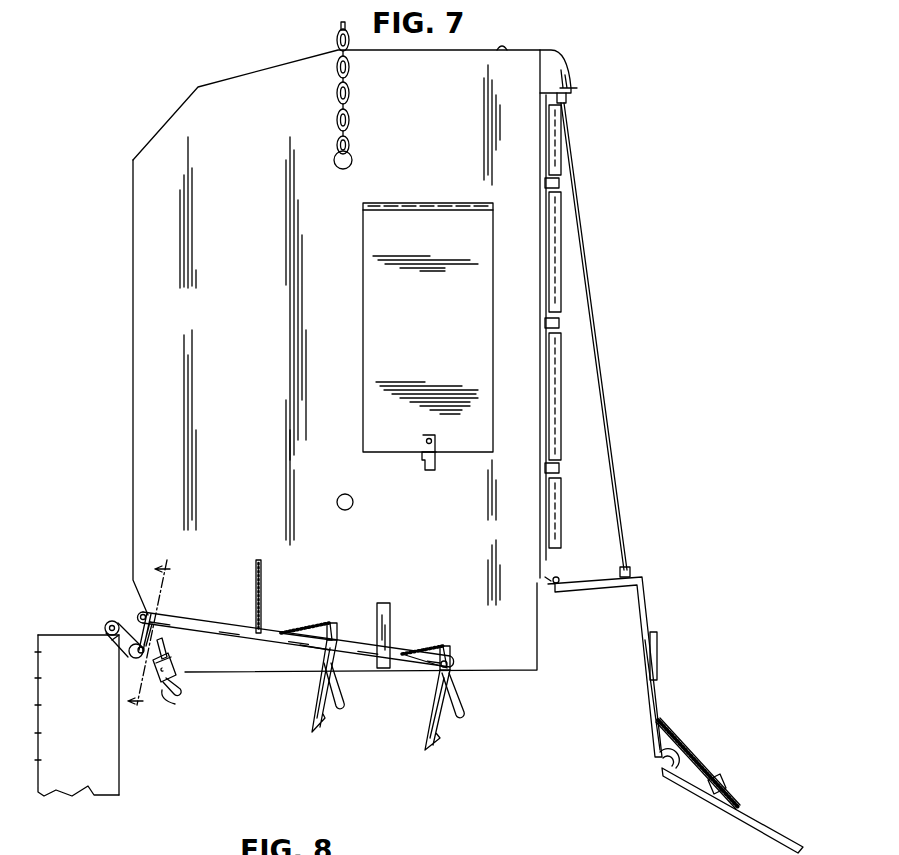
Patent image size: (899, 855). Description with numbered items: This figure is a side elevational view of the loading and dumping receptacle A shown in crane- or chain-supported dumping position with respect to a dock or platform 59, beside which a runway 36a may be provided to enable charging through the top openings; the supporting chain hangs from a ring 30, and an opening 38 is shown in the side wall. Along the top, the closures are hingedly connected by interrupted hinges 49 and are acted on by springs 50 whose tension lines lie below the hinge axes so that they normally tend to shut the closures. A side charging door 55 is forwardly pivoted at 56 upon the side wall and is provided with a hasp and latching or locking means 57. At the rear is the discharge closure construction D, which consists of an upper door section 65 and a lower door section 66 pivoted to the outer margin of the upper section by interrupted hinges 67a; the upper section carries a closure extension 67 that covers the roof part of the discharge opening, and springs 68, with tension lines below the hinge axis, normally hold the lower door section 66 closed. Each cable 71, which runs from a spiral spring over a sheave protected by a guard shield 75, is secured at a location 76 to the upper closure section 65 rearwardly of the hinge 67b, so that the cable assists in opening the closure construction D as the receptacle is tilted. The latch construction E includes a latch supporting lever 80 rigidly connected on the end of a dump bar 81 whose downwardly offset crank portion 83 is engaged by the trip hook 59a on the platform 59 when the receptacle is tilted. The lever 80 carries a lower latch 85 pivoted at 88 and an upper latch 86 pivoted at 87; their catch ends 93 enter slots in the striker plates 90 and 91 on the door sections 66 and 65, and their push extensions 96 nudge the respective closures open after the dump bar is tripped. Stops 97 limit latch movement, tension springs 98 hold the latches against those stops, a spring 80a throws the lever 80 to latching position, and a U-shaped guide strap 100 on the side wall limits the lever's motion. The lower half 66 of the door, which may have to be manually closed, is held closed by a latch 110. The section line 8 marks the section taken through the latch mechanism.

The loading and dumping receptacle A is at (148, 237).
The runway 36a is at (337, 96).
The ring 30 is at (352, 158).
The side charging door 55 is at (363, 348).
The pivot 56 is at (426, 207).
The latching or locking means 57 is at (436, 465).
The opening 38 is at (337, 502).
The hinge 49 is at (561, 242).
The spring 50 is at (560, 187).
The guard shield 75 is at (570, 90).
The cable 71 is at (588, 297).
The rear dumping or discharge closure construction D is at (674, 701).
The closure extension 67 is at (593, 590).
The cable securing location 76 is at (631, 572).
The hinge 67b is at (559, 579).
The striker plate 91 is at (658, 650).
The upper door section 65 is at (663, 694).
The interrupted hinge 67a is at (666, 762).
The lower door section 66 is at (741, 815).
The spring 68 is at (692, 748).
The striker plate 90 is at (718, 786).
The closure latch and closure opening construction E is at (185, 623).
The dump bar 81 is at (145, 605).
The crank portion 83 is at (132, 604).
The platform 59 is at (66, 640).
The trip hook 59a is at (122, 650).
The latch 110 is at (185, 676).
The section line 8- 8 is at (149, 637).
The spring 80a is at (262, 583).
The latch supporting lever 80 is at (270, 632).
The tension spring 98 is at (310, 623).
The pivot 88 is at (331, 648).
The stop 97 is at (296, 647).
The pivot 87 is at (451, 668).
The upper latch 86 is at (451, 680).
The lower latch 85 is at (327, 664).
The catch end 93 is at (326, 720).
The push extension 96 is at (343, 696).
The U-shaped guide strap 100 is at (391, 617).